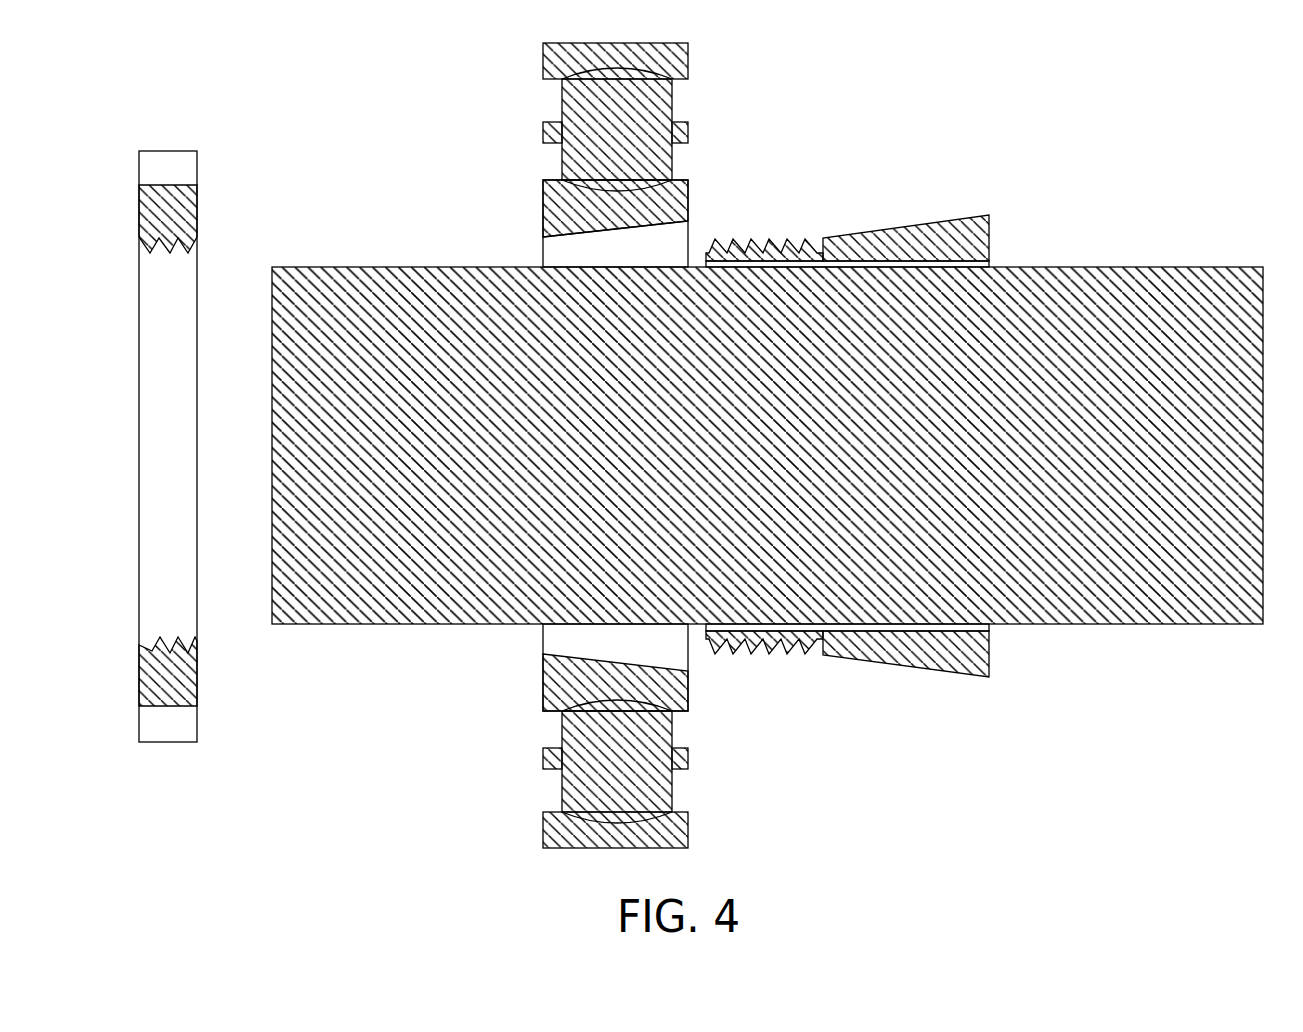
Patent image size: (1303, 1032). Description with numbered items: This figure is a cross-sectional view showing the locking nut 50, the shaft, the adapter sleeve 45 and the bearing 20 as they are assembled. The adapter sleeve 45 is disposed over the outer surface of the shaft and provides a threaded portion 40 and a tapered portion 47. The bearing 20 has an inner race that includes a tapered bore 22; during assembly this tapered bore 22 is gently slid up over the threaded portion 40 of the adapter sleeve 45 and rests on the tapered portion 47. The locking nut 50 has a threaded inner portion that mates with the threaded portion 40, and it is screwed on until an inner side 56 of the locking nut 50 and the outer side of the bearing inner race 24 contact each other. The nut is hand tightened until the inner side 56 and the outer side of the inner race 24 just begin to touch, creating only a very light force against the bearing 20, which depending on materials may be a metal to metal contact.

The bearing 20 is at (688, 60).
The tapered bore 22 is at (630, 227).
The outer side of the bearing inner race 24 is at (543, 210).
The threaded portion 40 is at (787, 240).
The adapter sleeve 45 is at (839, 688).
The tapered portion 47 is at (927, 222).
The locking nut 50 is at (170, 151).
The inner side of the locking nut 56 is at (197, 210).